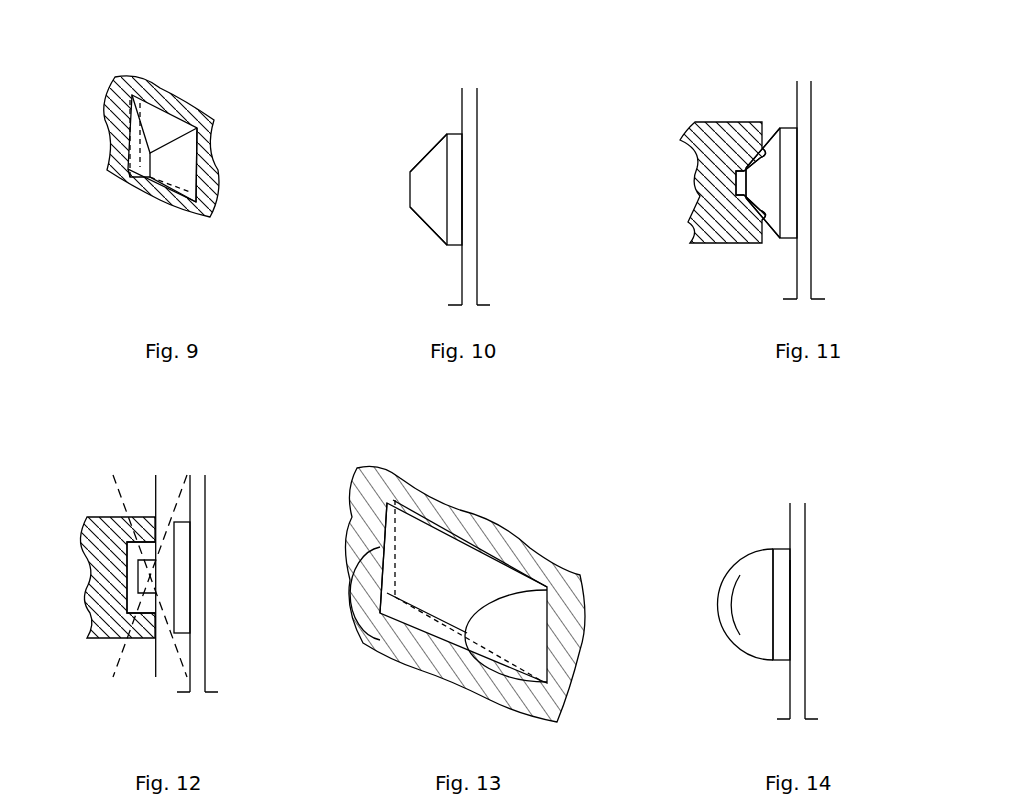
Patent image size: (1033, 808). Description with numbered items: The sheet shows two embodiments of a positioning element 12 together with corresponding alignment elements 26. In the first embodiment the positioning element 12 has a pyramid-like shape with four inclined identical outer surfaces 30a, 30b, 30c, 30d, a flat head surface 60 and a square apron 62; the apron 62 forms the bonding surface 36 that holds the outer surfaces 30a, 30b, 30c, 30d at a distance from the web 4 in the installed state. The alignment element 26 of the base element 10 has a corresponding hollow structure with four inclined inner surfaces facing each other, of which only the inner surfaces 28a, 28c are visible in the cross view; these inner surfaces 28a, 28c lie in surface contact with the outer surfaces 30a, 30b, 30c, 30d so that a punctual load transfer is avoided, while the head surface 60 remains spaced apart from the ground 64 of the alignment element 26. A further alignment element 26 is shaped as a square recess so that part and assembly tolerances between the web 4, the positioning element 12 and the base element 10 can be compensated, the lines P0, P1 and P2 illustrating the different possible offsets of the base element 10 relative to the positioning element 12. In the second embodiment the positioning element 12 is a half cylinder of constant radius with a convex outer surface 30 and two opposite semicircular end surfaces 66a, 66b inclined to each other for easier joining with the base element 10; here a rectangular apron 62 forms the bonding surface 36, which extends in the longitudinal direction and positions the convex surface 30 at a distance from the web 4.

In FIG. 9, the web 4 is at (172, 97).
In FIG. 10, the web 4 is at (477, 113).
In FIG. 11, the web 4 is at (813, 115).
In FIG. 12, the web 4 is at (207, 520).
In FIG. 13, the web 4 is at (560, 575).
In FIG. 14, the web 4 is at (805, 560).
In FIG. 11, the base element 10 is at (713, 215).
In FIG. 12, the base element 10 is at (100, 583).
In FIG. 9, the positioning element 12 is at (128, 175).
In FIG. 11, the positioning element 12 is at (752, 212).
In FIG. 12, the positioning element 12 is at (140, 598).
In FIG. 13, the positioning element 12 is at (367, 610).
In FIG. 14, the positioning element 12 is at (748, 658).
In FIG. 11, the alignment element 26 is at (757, 192).
In FIG. 12, the alignment element 26 is at (130, 577).
In FIG. 11, the inner surface 28a is at (763, 155).
In FIG. 11, the inner surface 28c is at (763, 218).
In FIG. 13, the convex outer surface 30 is at (450, 583).
In FIG. 14, the convex outer surface 30 is at (745, 557).
In FIG. 9, the outer surface 30a is at (153, 133).
In FIG. 10, the outer surface 30a is at (427, 153).
In FIG. 11, the outer surface 30a is at (752, 155).
In FIG. 9, the outer surface 30b is at (177, 163).
In FIG. 9, the outer surface 30c is at (148, 173).
In FIG. 10, the outer surface 30c is at (427, 223).
In FIG. 11, the outer surface 30c is at (762, 198).
In FIG. 9, the outer surface 30d is at (140, 148).
In FIG. 10, the bonding surface 36 is at (462, 197).
In FIG. 14, the bonding surface 36 is at (790, 602).
In FIG. 10, the head surface 60 is at (410, 190).
In FIG. 11, the head surface 60 is at (747, 190).
In FIG. 9, the apron 62 is at (190, 125).
In FIG. 10, the apron 62 is at (453, 227).
In FIG. 11, the apron 62 is at (788, 128).
In FIG. 12, the apron 62 is at (182, 577).
In FIG. 13, the apron 62 is at (522, 578).
In FIG. 14, the apron 62 is at (783, 567).
In FIG. 11, the ground 64 is at (740, 169).
In FIG. 13, the semicircular end surface 66a is at (502, 623).
In FIG. 14, the semicircular end surface 66a is at (760, 570).
In FIG. 13, the semicircular end surface 66b is at (367, 550).
In FIG. 12, the line P0 is at (159, 563).
In FIG. 12, the line P1 is at (161, 563).
In FIG. 12, the line P2 is at (147, 563).